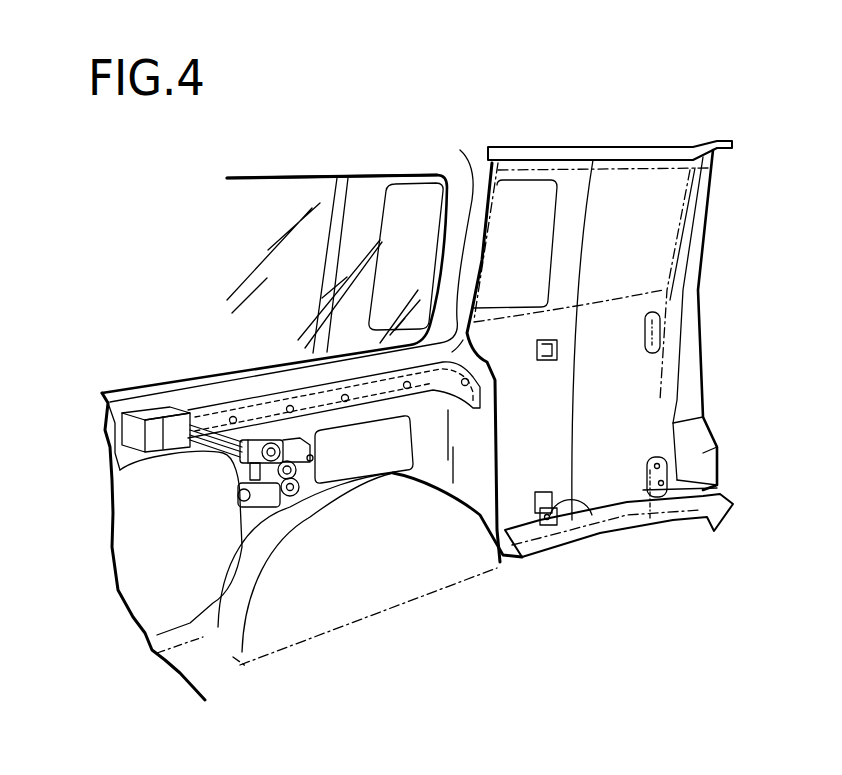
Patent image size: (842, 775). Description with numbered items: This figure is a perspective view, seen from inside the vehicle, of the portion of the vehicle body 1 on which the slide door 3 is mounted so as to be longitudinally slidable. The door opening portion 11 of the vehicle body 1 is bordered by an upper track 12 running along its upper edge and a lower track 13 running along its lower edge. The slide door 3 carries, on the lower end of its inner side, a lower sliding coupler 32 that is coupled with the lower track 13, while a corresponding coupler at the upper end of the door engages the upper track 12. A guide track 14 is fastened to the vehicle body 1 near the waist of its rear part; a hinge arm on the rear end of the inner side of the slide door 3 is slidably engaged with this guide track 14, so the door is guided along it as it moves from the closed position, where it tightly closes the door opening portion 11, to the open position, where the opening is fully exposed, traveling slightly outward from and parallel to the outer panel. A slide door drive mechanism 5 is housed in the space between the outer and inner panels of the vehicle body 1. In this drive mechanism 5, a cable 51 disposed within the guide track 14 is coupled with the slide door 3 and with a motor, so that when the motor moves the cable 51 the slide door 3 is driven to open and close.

The vehicle body 1 is at (117, 432).
The slide door 3 is at (600, 363).
The slide door drive mechanism 5 is at (238, 467).
The door opening portion 11 is at (637, 223).
The upper track 12 is at (577, 158).
The lower track 13 is at (683, 517).
The guide track 14 is at (265, 403).
The lower sliding coupler 32 is at (516, 487).
The cable 51 is at (205, 408).